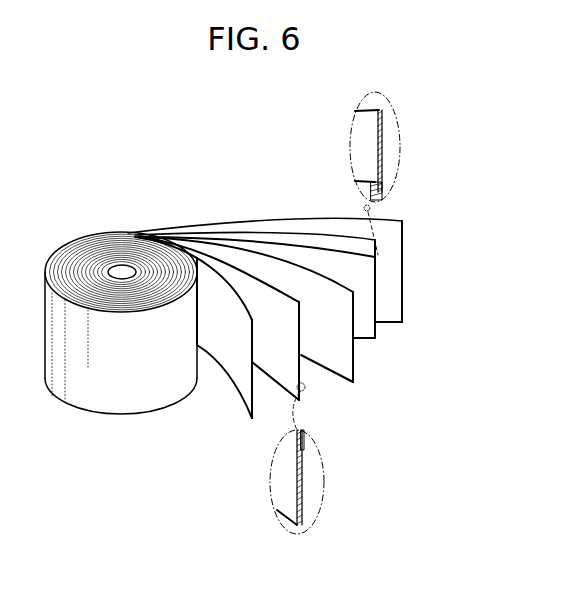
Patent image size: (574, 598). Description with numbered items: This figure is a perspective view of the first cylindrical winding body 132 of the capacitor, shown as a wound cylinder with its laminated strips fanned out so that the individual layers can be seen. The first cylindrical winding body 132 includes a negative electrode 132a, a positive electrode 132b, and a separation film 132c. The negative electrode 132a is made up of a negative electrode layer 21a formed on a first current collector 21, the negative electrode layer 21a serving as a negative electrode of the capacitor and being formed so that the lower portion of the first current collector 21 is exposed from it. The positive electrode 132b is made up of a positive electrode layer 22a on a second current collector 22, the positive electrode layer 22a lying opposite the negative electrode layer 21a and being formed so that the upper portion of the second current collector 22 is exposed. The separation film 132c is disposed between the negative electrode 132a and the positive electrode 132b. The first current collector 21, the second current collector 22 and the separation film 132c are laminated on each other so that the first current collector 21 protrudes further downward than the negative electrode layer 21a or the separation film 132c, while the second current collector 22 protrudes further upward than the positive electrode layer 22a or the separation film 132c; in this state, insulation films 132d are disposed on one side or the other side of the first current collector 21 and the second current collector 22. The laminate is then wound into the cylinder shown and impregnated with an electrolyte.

The first cylindrical winding body 132 is at (108, 230).
The first current collector 21 is at (277, 366).
The second current collector 22 is at (284, 230).
The negative electrode layer 21a is at (305, 442).
The positive electrode layer 22a is at (372, 189).
The negative electrode 132a is at (304, 374).
The positive electrode 132b is at (384, 150).
The separation film 132c is at (356, 372).
The insulation film 132d is at (225, 366).